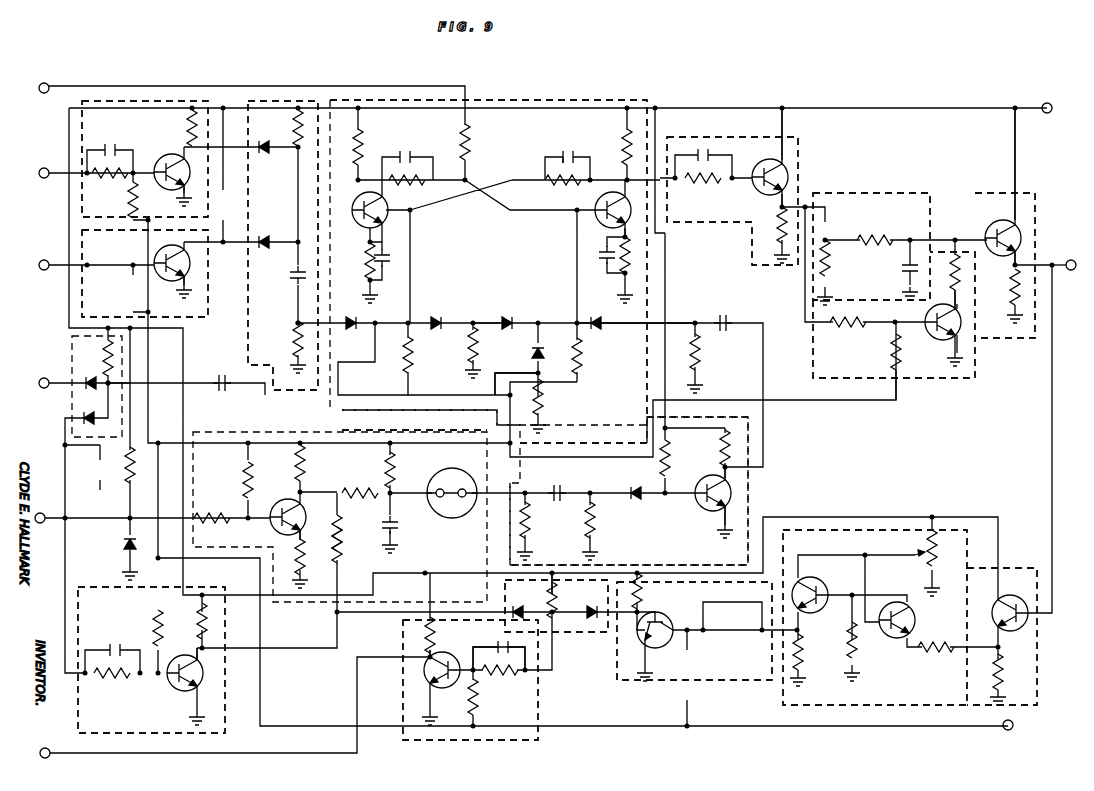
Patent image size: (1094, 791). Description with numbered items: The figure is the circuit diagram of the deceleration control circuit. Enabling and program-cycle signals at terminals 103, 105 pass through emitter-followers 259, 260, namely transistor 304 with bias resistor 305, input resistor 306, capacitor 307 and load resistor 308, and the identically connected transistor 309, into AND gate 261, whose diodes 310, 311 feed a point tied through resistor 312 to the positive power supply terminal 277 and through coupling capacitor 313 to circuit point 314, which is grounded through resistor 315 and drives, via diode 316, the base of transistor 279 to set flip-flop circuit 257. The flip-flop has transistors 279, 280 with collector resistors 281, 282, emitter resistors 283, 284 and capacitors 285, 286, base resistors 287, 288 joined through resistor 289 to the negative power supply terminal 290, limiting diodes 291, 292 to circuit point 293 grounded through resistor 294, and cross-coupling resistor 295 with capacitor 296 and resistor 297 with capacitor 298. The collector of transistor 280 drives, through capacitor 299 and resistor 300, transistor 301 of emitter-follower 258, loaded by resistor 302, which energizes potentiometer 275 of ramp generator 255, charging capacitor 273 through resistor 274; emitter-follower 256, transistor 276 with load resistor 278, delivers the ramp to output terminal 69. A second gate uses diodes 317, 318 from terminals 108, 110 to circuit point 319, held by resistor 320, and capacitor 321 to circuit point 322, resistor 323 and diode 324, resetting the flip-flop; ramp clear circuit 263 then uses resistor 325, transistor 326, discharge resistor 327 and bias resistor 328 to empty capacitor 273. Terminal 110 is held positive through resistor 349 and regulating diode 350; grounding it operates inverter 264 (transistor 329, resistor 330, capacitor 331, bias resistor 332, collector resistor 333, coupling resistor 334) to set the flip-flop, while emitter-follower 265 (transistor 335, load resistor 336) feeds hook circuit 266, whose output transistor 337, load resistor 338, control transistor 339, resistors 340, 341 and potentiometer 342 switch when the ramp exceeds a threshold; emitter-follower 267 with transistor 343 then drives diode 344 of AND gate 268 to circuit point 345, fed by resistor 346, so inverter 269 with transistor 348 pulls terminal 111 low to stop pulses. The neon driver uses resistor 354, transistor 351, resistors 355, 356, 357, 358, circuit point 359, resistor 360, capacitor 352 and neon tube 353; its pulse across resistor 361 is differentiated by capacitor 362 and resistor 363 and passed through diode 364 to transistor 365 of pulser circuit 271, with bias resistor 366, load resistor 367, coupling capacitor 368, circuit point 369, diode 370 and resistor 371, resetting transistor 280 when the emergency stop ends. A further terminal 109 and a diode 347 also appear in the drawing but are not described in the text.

The input terminal 109 is at (44, 94).
The input terminal 103 is at (44, 179).
The terminal 105 is at (52, 249).
The input terminal 108 is at (44, 382).
The emergency stop input terminal 110 is at (42, 523).
The terminal 111 is at (50, 748).
The power supply terminal 277 is at (1050, 101).
The output terminal 69 is at (1080, 255).
The negative power supply terminal 290 is at (1004, 730).
The emitter-follower 259 is at (78, 141).
The emitter-follower 260 is at (78, 297).
The gate circuit 261 is at (246, 346).
The flip-flop circuit 257 is at (648, 100).
The emitter-follower 258 is at (752, 130).
The ramp generator 255 is at (882, 192).
The emitter-follower 256 is at (1025, 190).
The ramp clear circuit 263 is at (968, 380).
The resistor 289 is at (500, 416).
The pulser circuit 271 is at (748, 456).
The inverter 264 is at (228, 687).
The AND gate 268 is at (567, 636).
The inverter 269 is at (540, 718).
The emitter-follower 267 is at (651, 683).
The hook circuit 266 is at (784, 706).
The emitter-follower 265 is at (968, 706).
The capacitor 307 is at (124, 133).
The resistor 306 is at (118, 180).
The bias resistor 305 is at (127, 208).
The transistor 304 is at (166, 158).
The load resistor 308 is at (170, 162).
The diode 310 is at (266, 151).
The resistor 312 is at (295, 125).
The transistor 309 is at (190, 263).
The diode 311 is at (266, 242).
The coupling capacitor 313 is at (294, 282).
The circuit point 314 is at (294, 323).
The resistor 315 is at (293, 341).
The diode 316 is at (357, 330).
The resistor 320 is at (104, 352).
The circuit point 319 is at (112, 382).
The diode 317 is at (85, 389).
The diode 318 is at (82, 420).
The capacitor 321 is at (220, 378).
The resistor 349 is at (128, 482).
The regulating diode 350 is at (125, 548).
The resistor 355 is at (245, 467).
The resistor 354 is at (214, 514).
The resistor 357 is at (297, 461).
The transistor 351 is at (296, 501).
The resistor 356 is at (294, 559).
The resistor 360 is at (386, 465).
The circuit point 359 is at (390, 518).
The neon tube 353 is at (442, 470).
The resistor 358 is at (366, 500).
The capacitor 352 is at (341, 533).
The resistor 334 is at (342, 552).
The diode 291 is at (438, 318).
The circuit point 293 is at (480, 319).
The diode 292 is at (512, 319).
The resistor 287 is at (412, 355).
The resistor 294 is at (477, 352).
The diode 324 is at (542, 345).
The diode 370 is at (600, 318).
The resistor 288 is at (582, 356).
The circuit point 322 is at (545, 373).
The resistor 323 is at (545, 405).
The resistor 281 is at (370, 144).
The capacitor 296 is at (428, 152).
The resistor 295 is at (420, 187).
The resistor 297 is at (557, 187).
The capacitor 298 is at (564, 150).
The resistor 282 is at (624, 136).
The transistor 279 is at (396, 220).
The resistor 283 is at (378, 258).
The capacitor 285 is at (390, 264).
The transistor 280 is at (594, 218).
The capacitor 286 is at (604, 258).
The resistor 284 is at (629, 254).
The capacitor 299 is at (708, 150).
The resistor 300 is at (706, 185).
The transistor 301 is at (790, 172).
The load resistor 302 is at (780, 228).
The potentiometer 275 is at (827, 240).
The resistor 274 is at (875, 240).
The capacitor 273 is at (904, 269).
The resistor 325 is at (950, 296).
The resistor 327 is at (957, 314).
The resistor 328 is at (856, 330).
The transistor 326 is at (899, 334).
The transistor 276 is at (1020, 230).
The load resistor 278 is at (1018, 290).
The circuit point 369 is at (696, 320).
The coupling capacitor 368 is at (722, 320).
The resistor 371 is at (700, 352).
The bias resistor 366 is at (662, 459).
The load resistor 367 is at (722, 456).
The transistor 365 is at (732, 490).
The diode 364 is at (640, 500).
The capacitor 362 is at (560, 490).
The resistor 361 is at (529, 522).
The resistor 363 is at (594, 522).
The bias resistor 332 is at (155, 618).
The capacitor 331 is at (128, 634).
The resistor 330 is at (104, 680).
The resistor 333 is at (207, 635).
The transistor 329 is at (176, 690).
The transistor 348 is at (465, 645).
The diode 347 is at (509, 610).
The resistor 346 is at (550, 592).
The circuit point 345 is at (558, 606).
The diode 344 is at (594, 622).
The transistor 343 is at (658, 615).
The potentiometer 342 is at (936, 545).
The output transistor 337 is at (815, 586).
The control transistor 339 is at (901, 600).
The load resistor 338 is at (802, 650).
The resistor 341 is at (857, 644).
The resistor 340 is at (940, 634).
The load resistor 336 is at (995, 666).
The transistor 335 is at (1022, 586).